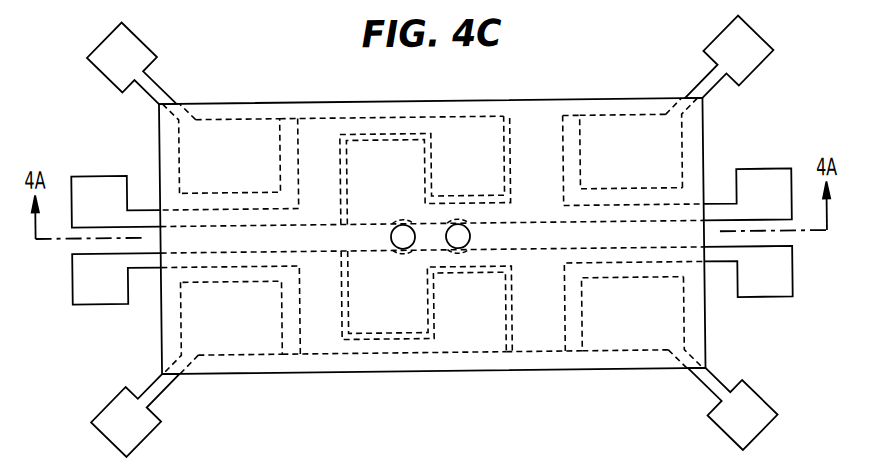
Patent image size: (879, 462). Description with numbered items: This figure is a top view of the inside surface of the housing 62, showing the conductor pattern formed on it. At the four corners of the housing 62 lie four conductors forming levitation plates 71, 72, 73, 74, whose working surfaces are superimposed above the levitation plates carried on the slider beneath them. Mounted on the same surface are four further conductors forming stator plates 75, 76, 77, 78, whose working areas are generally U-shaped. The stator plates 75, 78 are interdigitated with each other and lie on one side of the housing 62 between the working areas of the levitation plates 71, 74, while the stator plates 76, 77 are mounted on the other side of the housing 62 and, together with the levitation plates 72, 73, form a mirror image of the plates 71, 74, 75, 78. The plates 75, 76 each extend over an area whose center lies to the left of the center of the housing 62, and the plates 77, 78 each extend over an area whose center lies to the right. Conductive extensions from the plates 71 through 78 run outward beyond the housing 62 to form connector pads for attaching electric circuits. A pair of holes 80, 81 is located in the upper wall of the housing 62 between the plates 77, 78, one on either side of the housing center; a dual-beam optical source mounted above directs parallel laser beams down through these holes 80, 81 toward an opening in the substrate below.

The housing 62 is at (470, 371).
The levitation plate 71 is at (636, 115).
The levitation plate 72 is at (631, 353).
The levitation plate 73 is at (231, 356).
The levitation plate 74 is at (249, 117).
The stator plate 75 is at (320, 127).
The stator plate 76 is at (317, 344).
The stator plate 77 is at (534, 306).
The stator plate 78 is at (536, 168).
The hole 80 is at (391, 236).
The hole 81 is at (470, 237).